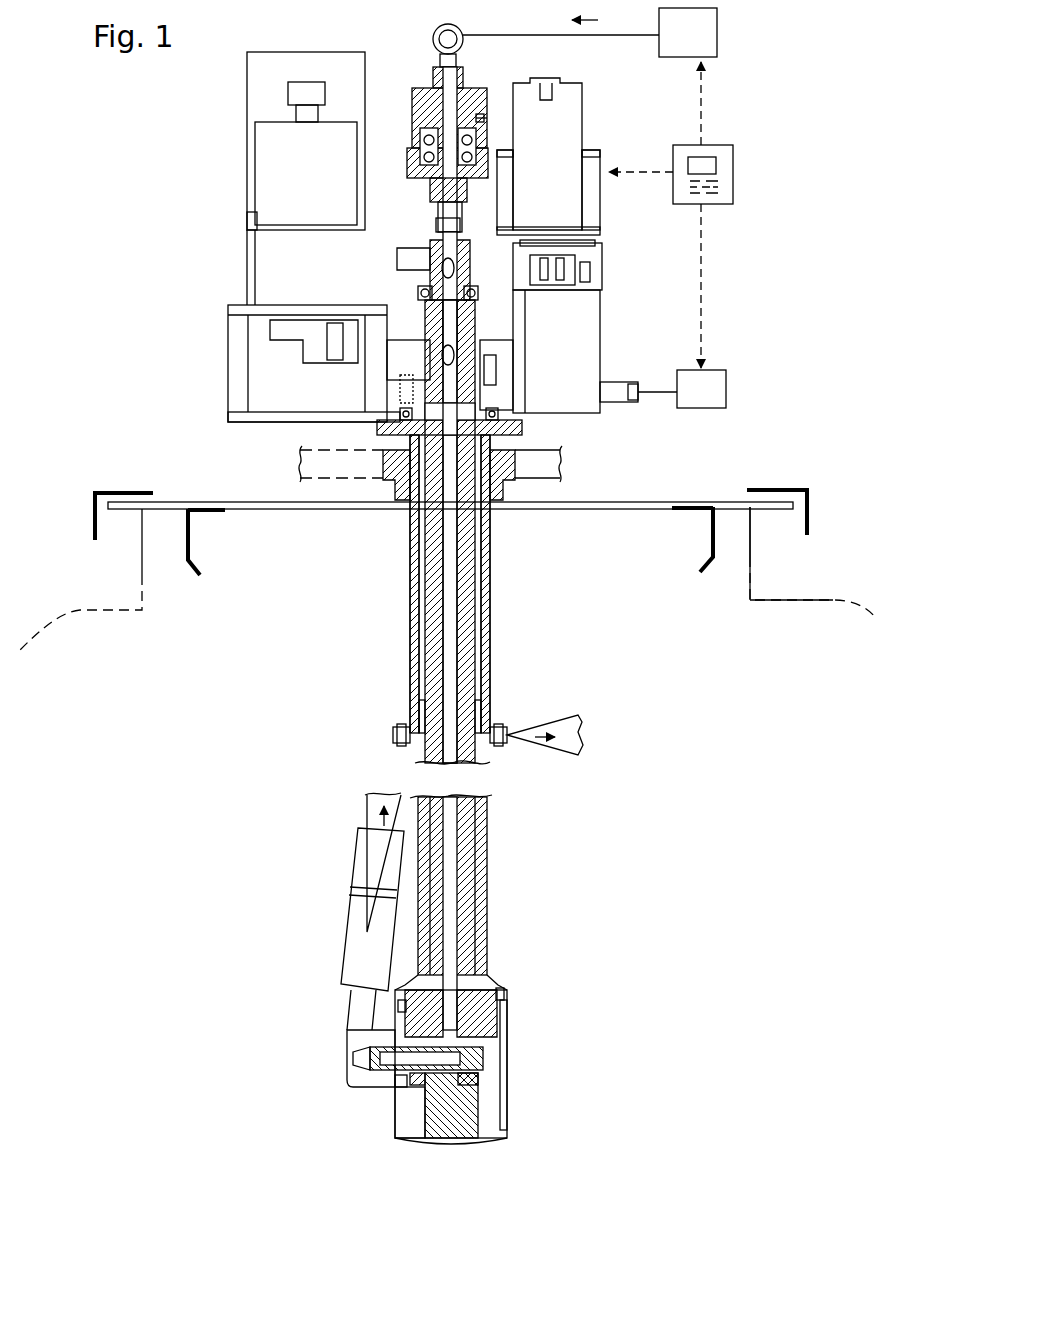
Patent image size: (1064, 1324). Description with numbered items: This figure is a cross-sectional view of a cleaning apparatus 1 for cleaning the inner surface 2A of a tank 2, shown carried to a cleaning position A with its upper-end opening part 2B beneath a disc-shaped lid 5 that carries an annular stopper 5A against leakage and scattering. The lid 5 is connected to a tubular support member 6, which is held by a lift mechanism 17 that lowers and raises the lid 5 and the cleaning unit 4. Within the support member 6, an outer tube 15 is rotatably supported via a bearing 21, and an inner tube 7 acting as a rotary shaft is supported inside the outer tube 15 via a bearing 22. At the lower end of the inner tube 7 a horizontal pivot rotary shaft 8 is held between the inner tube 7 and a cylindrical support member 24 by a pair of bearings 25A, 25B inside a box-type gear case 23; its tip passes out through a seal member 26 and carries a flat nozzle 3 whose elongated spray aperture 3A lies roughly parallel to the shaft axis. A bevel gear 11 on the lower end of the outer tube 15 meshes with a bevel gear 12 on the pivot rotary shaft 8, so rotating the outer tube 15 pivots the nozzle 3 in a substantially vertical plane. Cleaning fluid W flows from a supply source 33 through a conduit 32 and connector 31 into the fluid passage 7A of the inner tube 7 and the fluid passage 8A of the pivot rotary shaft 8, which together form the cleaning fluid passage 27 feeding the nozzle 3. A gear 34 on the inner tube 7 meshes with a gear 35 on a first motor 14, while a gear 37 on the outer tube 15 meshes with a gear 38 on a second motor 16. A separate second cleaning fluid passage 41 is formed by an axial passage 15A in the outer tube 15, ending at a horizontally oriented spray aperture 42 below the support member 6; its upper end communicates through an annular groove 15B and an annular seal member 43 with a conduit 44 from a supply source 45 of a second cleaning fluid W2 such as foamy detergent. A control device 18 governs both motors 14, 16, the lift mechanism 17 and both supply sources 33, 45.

The cleaning apparatus 1 is at (650, 742).
The tank 2 is at (778, 595).
The inner surface 2A is at (768, 602).
The upper-end opening part 2B is at (750, 510).
The nozzle 3 is at (358, 935).
The spray aperture 3A is at (370, 822).
The cleaning unit 4 is at (492, 912).
The lid 5 is at (635, 500).
The annular stopper 5A is at (95, 532).
The support member 6 is at (490, 582).
The inner tube 7 is at (465, 648).
The fluid passage 7A is at (450, 677).
The pivot rotary shaft 8 is at (488, 1068).
The fluid passage 8A is at (380, 1072).
The bevel gear 11 is at (493, 1030).
The bevel gear 12 is at (410, 1085).
The first motor 14 is at (560, 150).
The outer tube 15 is at (415, 762).
The axial passage 15A is at (484, 546).
The annular groove 15B is at (402, 395).
The second motor 16 is at (272, 188).
The lift mechanism 17 is at (575, 458).
The control device 18 is at (733, 182).
The bearing 21 is at (380, 425).
The bearing 22 is at (418, 293).
The gear case 23 is at (503, 1140).
The support member 24 is at (450, 1125).
The bearing 25A is at (420, 1088).
The bearing 25B is at (480, 1080).
The seal member 26 is at (392, 1082).
The cleaning fluid passage 27 is at (450, 855).
The connector 31 is at (412, 116).
The conduit 32 is at (555, 45).
The supply source 33 is at (705, 40).
The gear 34 is at (410, 250).
The gear 35 is at (602, 260).
The gear 37 is at (403, 338).
The gear 38 is at (283, 342).
The second cleaning fluid passage 41 is at (478, 712).
The spray aperture 42 is at (393, 730).
The annular seal member 43 is at (496, 372).
The conduit 44 is at (655, 392).
The supply source 45 is at (710, 392).
The cleaning position A is at (679, 882).
The cleaning fluid W is at (370, 810).
The cleaning fluid W2 is at (570, 725).